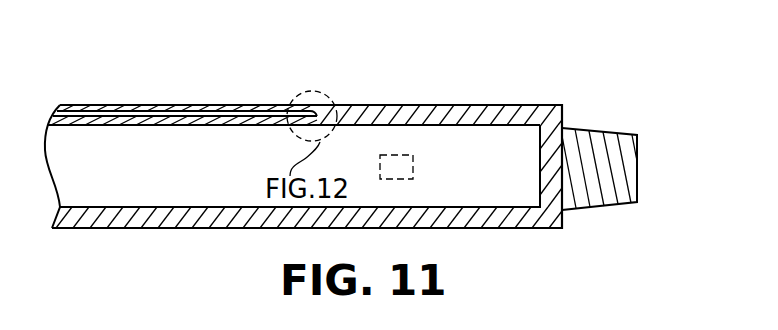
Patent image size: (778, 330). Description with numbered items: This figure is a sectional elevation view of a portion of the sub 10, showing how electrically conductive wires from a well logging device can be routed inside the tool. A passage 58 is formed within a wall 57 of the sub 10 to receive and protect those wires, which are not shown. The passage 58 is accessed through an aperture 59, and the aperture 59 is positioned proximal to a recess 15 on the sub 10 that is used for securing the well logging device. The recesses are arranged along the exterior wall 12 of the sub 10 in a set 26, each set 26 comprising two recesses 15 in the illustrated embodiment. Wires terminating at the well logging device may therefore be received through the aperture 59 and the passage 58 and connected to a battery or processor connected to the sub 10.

The sub 10 is at (525, 104).
The exterior wall 12 is at (118, 105).
The recess 15 is at (413, 160).
The set of recesses 26 is at (380, 89).
The wall 57 is at (455, 104).
The passage 58 is at (268, 105).
The aperture 59 is at (314, 91).